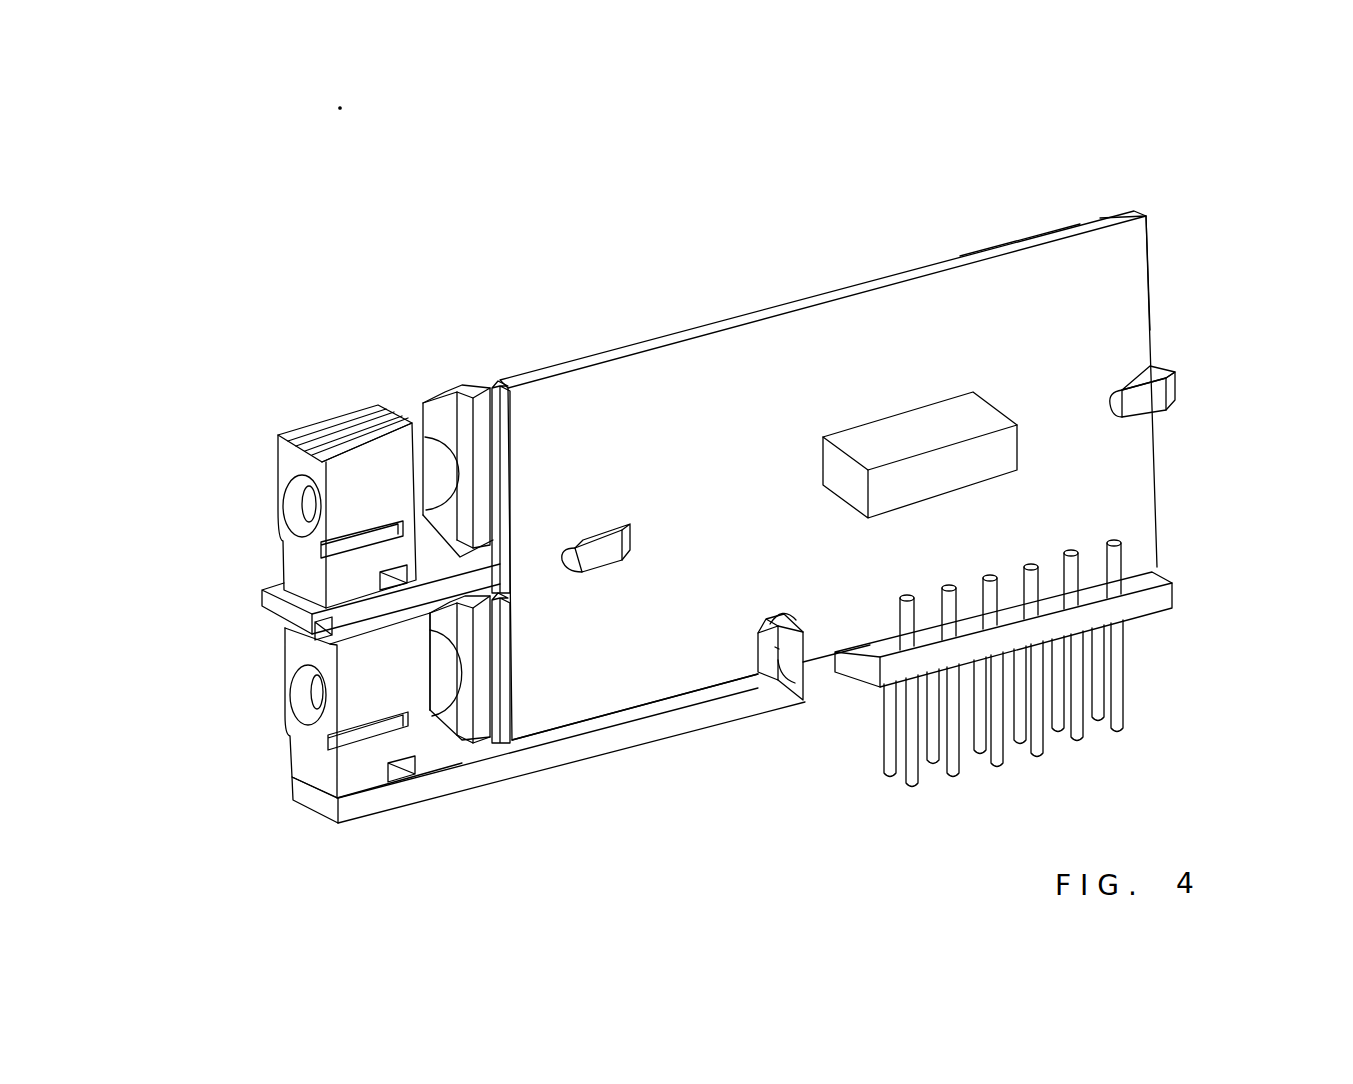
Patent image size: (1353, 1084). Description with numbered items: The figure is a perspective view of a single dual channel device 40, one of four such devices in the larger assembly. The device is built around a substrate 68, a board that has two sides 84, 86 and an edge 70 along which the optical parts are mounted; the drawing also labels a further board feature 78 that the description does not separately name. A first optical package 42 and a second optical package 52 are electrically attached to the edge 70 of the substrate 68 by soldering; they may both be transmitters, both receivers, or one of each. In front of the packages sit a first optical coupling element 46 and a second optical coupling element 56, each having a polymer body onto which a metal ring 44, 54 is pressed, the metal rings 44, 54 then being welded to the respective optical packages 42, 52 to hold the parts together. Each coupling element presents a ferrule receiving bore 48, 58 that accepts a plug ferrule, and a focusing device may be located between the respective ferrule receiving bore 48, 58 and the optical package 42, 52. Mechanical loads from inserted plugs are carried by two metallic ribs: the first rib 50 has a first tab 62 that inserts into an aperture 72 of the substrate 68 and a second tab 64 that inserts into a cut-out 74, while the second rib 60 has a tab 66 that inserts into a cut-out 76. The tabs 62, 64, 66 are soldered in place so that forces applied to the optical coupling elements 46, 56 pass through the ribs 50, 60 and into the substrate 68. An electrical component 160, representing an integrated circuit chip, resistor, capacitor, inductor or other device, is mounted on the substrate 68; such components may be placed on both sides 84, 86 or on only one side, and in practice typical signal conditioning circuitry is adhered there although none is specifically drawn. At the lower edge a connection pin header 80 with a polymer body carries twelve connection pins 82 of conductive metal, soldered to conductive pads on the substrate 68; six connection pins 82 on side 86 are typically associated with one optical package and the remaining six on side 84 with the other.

The dual channel device 40 is at (328, 412).
The first optical package 42 is at (430, 400).
The metal ring 44 is at (428, 455).
The first optical coupling element 46 is at (302, 428).
The ferrule receiving bore 48 is at (305, 505).
The first rib 50 is at (262, 600).
The second optical package 52 is at (496, 744).
The metal ring 54 is at (472, 728).
The second optical coupling element 56 is at (290, 774).
The ferrule receiving bore 58 is at (313, 697).
The second rib 60 is at (330, 810).
The first tab 62 is at (626, 548).
The second tab 64 is at (1153, 410).
The tab 66 is at (773, 648).
The substrate 68 is at (985, 243).
The edge 70 is at (492, 388).
The aperture 72 is at (567, 545).
The cut-out 74 is at (1112, 392).
The cut-out 76 is at (767, 628).
The circuit board bottom edge 78 is at (818, 662).
The connection pin header 80 is at (1177, 587).
The connection pins 82 is at (1128, 686).
The side 84 is at (1113, 236).
The side 86 is at (1028, 233).
The electrical component 160 is at (1020, 455).